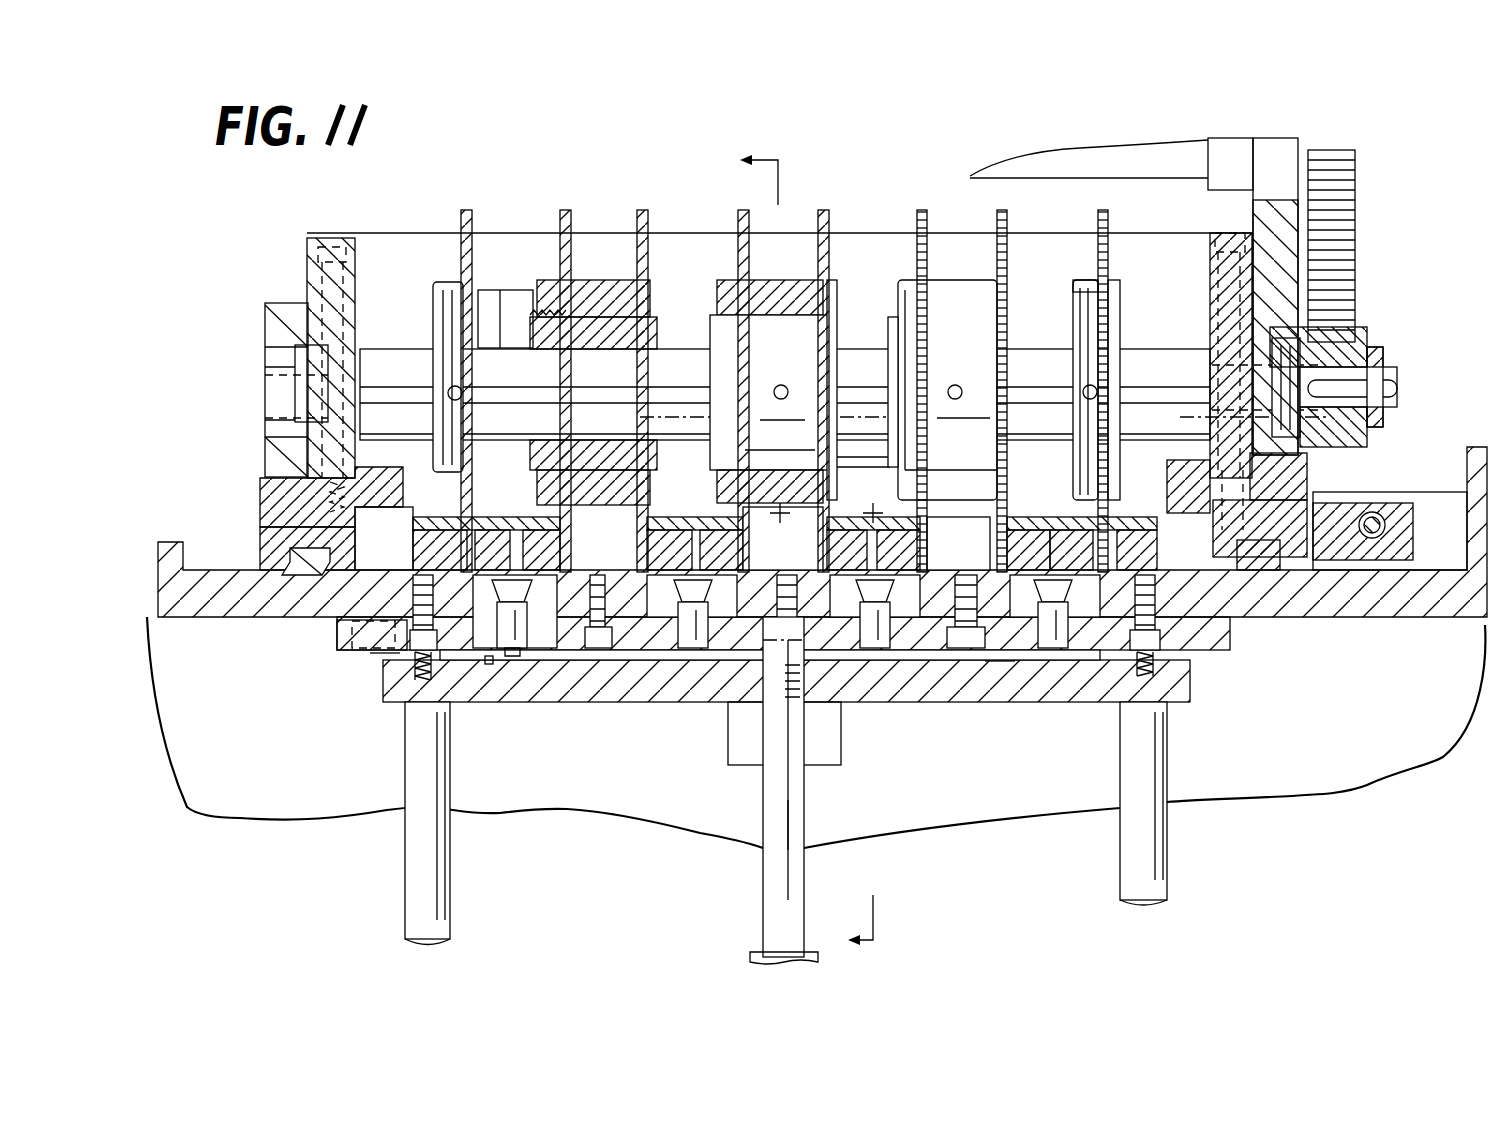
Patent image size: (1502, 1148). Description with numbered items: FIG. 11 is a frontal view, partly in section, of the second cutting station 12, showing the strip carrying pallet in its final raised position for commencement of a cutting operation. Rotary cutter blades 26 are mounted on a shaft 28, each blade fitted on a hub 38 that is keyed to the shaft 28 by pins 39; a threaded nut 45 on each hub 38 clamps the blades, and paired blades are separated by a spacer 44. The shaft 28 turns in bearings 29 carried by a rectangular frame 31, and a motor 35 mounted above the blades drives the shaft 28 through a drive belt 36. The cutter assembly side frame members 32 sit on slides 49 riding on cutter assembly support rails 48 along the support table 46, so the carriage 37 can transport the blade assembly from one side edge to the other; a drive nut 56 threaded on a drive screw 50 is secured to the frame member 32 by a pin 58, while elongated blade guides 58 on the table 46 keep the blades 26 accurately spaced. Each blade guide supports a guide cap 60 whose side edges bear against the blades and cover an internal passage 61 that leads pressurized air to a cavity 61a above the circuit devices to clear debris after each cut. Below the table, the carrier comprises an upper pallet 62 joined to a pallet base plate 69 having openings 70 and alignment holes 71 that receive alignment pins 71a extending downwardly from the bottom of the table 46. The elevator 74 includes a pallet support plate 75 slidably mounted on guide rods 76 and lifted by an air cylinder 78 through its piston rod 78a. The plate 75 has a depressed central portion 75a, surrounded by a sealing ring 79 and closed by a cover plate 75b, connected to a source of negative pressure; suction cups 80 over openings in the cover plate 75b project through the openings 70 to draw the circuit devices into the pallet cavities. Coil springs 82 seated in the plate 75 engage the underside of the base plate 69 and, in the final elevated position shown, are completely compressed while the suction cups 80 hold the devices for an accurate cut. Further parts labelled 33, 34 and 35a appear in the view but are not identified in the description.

The second cutting station 12 is at (292, 294).
The rotary cutter blades 26 is at (560, 215).
The shaft 28 is at (1130, 340).
The bearings 29 is at (335, 357).
The rectangular frame 31 is at (292, 268).
The cutter assembly side frame members 32 is at (270, 493).
The bolt 33 is at (322, 250).
The collar 34 is at (1360, 333).
The motor 35 is at (1127, 160).
The arm end 35a is at (1277, 150).
The drive belt 36 is at (1340, 226).
The carriage 37 is at (870, 233).
The hub 38 is at (532, 328).
The pins 39 is at (450, 391).
The spacer 44 is at (603, 300).
The threaded nut 45 is at (533, 262).
The support table 46 is at (300, 622).
The cutter assembly support rails 48 is at (1263, 570).
The slides 49 is at (273, 540).
The drive screw 50 is at (1375, 515).
The drive nut 56 is at (1417, 552).
The blade guide 58 is at (670, 540).
The guide cap 60 is at (1010, 503).
The internal passage 61 is at (640, 530).
The cavity 61a is at (702, 565).
The pallet 62 is at (410, 597).
The pallet base plate 69 is at (1223, 650).
The openings 70 is at (520, 664).
The alignment holes 71 is at (395, 620).
The alignment pins 71a is at (376, 653).
The elevator 74 is at (760, 790).
The pallet support plate 75 is at (966, 690).
The depressed central portion 75a is at (1033, 662).
The cover plate 75b is at (997, 660).
The guide rods 76 is at (440, 893).
The air cylinder 78 is at (762, 950).
The piston rod 78a is at (812, 825).
The sealing ring 79 is at (488, 664).
The suction cups 80 is at (690, 637).
The coil springs 82 is at (413, 688).